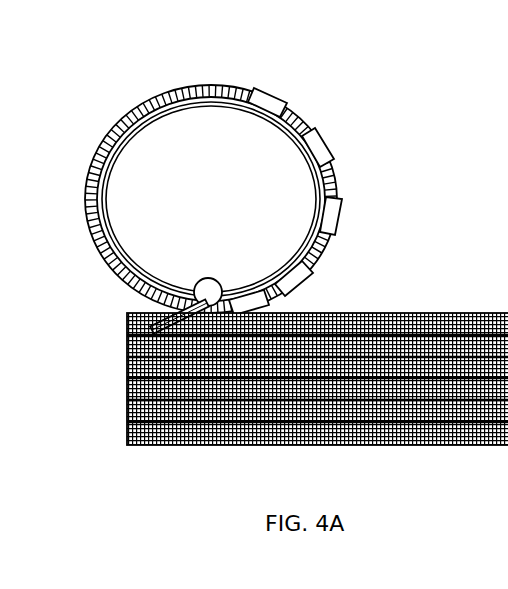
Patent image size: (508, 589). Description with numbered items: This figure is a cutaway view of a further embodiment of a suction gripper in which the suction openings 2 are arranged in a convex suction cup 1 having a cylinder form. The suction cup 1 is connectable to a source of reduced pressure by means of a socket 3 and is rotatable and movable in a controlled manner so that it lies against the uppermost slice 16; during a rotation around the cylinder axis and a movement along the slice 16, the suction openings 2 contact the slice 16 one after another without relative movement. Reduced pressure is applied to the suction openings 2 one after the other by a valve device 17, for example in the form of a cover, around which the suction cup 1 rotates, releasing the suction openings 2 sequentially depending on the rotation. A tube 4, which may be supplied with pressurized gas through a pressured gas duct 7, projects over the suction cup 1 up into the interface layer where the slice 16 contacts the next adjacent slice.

The suction cup 1 is at (248, 187).
The suction openings 2 is at (288, 96).
The socket 3 is at (134, 156).
The tube 4 is at (155, 309).
The pressured gas duct 7 is at (199, 281).
The slice 16 is at (127, 326).
The valve device 17 is at (303, 205).